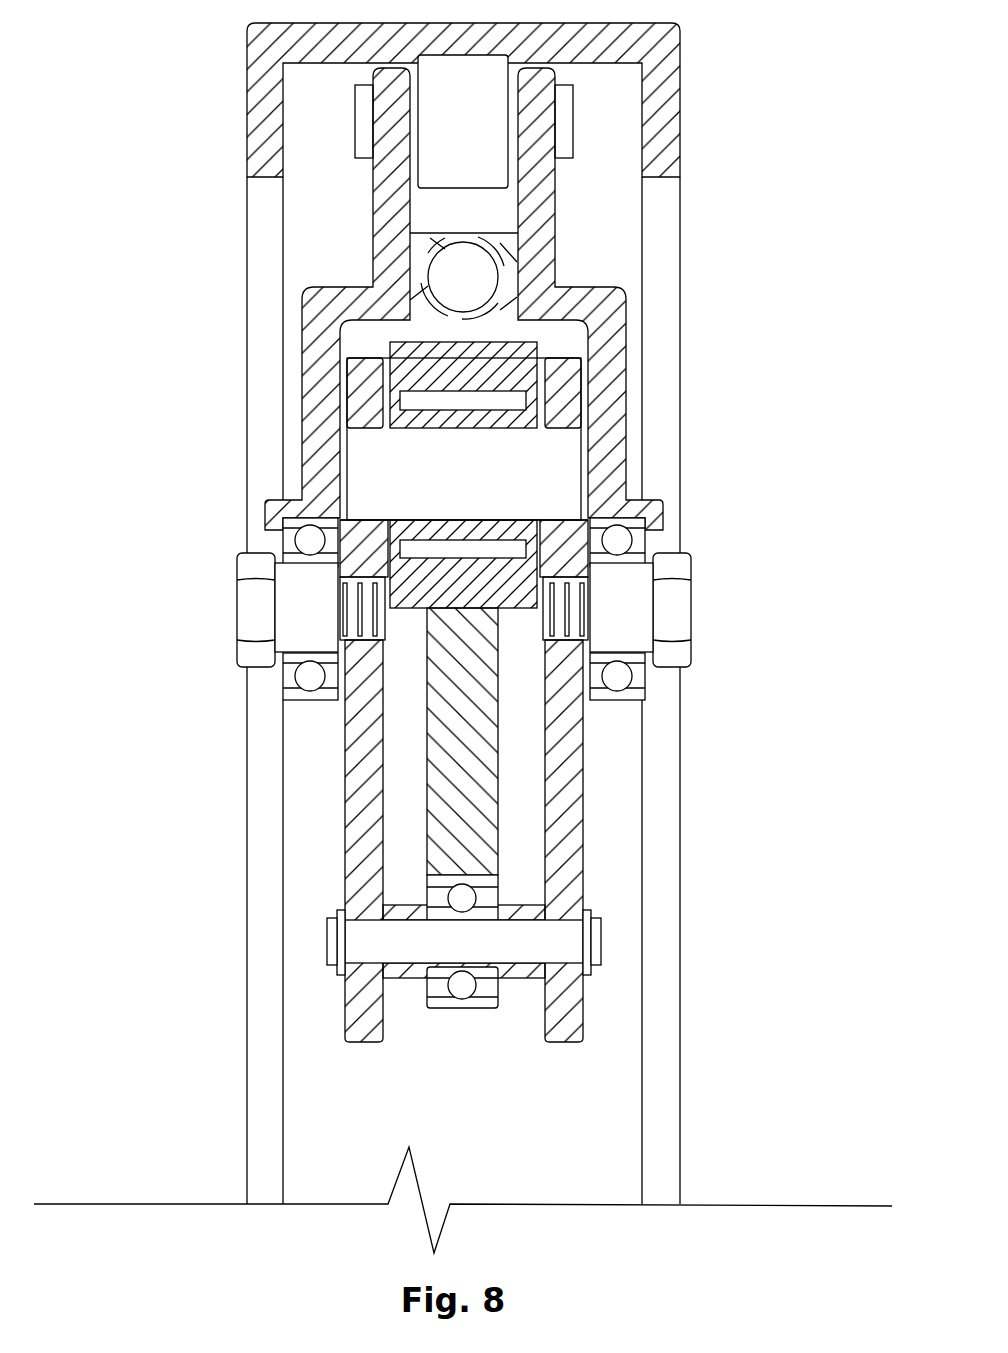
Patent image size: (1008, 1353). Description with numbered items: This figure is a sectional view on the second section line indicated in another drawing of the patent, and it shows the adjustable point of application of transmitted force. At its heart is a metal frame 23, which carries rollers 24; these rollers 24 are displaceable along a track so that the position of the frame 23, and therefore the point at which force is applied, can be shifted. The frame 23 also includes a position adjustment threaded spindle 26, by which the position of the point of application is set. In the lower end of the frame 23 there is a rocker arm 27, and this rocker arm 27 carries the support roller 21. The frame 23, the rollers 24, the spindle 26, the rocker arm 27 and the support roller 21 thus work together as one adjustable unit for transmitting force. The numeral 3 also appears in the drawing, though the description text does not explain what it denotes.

The shaft 3 is at (505, 778).
The support roller 21 is at (507, 352).
The metal frame 23 is at (590, 303).
The rollers 24 is at (474, 125).
The position adjustment threaded spindle 26 is at (449, 293).
The rocker arm 27 is at (342, 820).